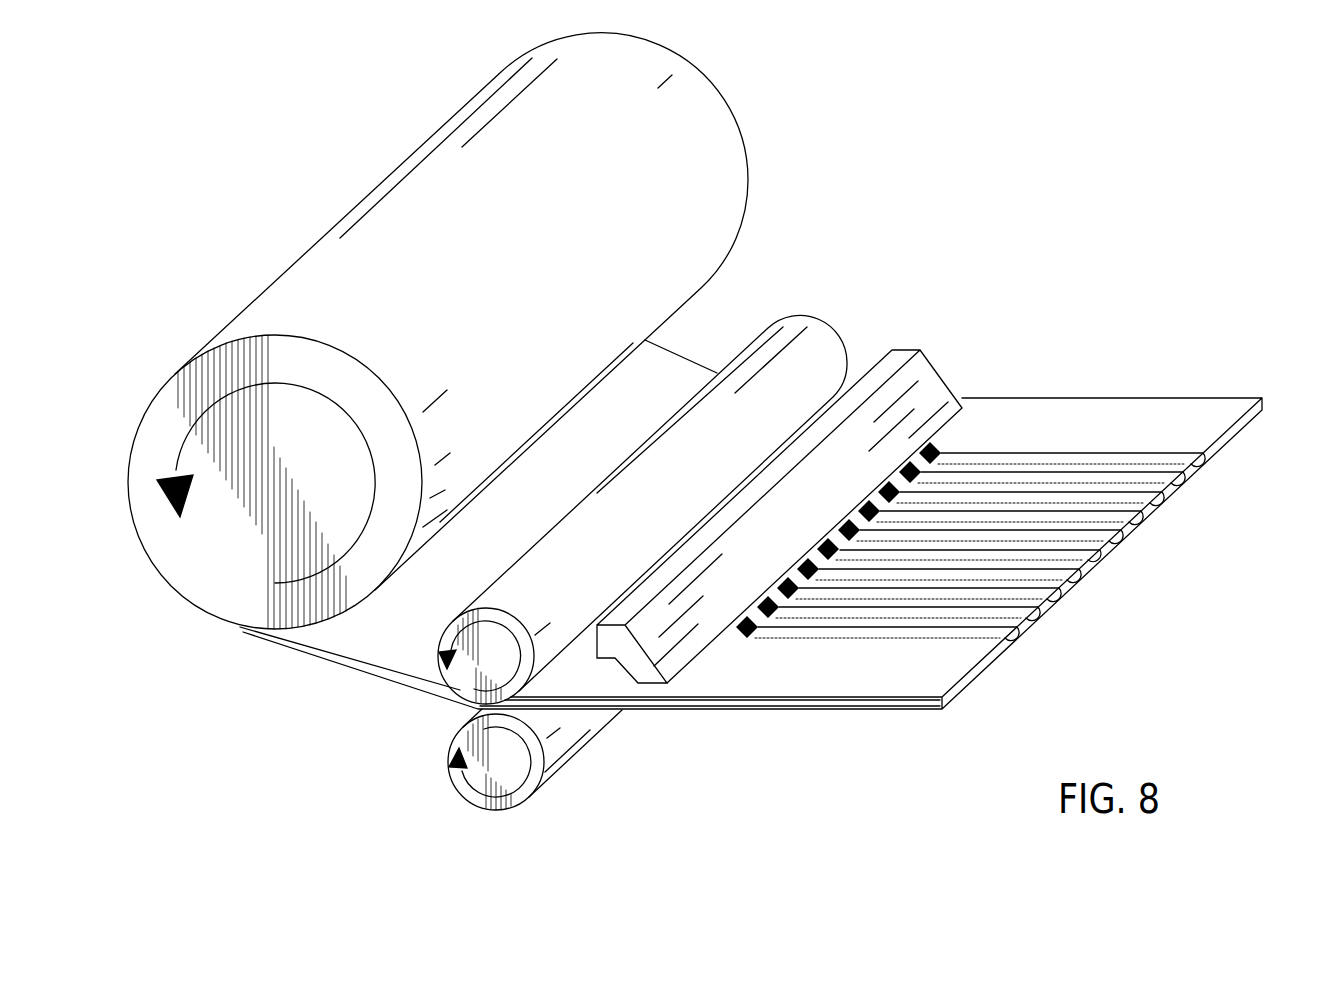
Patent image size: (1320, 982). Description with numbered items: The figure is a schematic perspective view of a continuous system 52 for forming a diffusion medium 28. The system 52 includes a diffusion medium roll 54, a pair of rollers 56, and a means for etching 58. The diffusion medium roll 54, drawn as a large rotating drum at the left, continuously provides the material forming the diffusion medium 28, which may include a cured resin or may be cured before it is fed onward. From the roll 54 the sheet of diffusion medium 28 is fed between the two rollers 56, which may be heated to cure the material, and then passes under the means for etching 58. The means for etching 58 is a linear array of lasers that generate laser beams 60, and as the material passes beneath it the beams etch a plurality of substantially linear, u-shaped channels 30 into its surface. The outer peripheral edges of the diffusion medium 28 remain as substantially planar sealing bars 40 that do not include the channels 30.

The diffusion medium 28 is at (1198, 398).
The channels 30 is at (1115, 487).
The sealing bars 40 is at (888, 677).
The continuous system 52 is at (271, 134).
The diffusion medium roll 54 is at (302, 488).
The rollers 56 is at (472, 668).
The means for etching 58 is at (900, 357).
The laser beams 60 is at (943, 446).